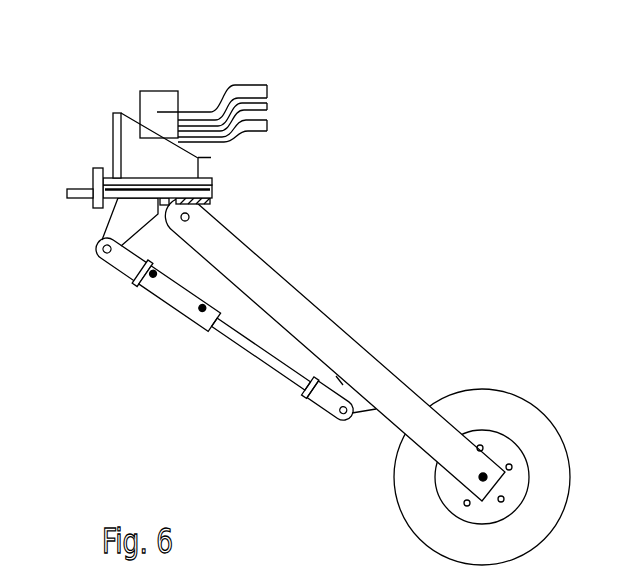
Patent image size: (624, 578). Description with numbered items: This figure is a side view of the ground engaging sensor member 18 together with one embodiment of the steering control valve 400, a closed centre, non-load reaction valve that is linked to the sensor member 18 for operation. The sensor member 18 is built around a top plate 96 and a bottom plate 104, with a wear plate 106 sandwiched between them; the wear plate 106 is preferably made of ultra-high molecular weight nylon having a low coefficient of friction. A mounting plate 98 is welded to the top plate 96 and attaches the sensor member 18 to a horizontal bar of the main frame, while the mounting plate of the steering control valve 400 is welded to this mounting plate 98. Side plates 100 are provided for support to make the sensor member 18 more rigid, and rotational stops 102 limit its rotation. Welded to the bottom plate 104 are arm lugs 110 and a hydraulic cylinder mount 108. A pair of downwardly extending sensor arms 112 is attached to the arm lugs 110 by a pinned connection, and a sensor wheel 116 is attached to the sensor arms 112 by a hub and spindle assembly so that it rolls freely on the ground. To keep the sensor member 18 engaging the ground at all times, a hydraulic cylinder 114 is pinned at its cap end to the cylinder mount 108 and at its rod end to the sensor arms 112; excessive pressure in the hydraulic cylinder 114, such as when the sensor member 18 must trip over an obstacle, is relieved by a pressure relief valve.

The ground engaging sensor member 18 is at (427, 190).
The steering control valve 400 is at (159, 88).
The mounting plate 98 is at (104, 115).
The side plates 100 is at (207, 148).
The rotational stops 102 is at (83, 171).
The top plate 96 is at (220, 170).
The wear plate 106 is at (222, 184).
The bottom plate 104 is at (222, 190).
The arm lugs 110 is at (216, 199).
The hydraulic cylinder mount 108 is at (99, 234).
The hydraulic cylinder 114 is at (174, 321).
The sensor arms 112 is at (362, 334).
The sensor wheel 116 is at (546, 408).